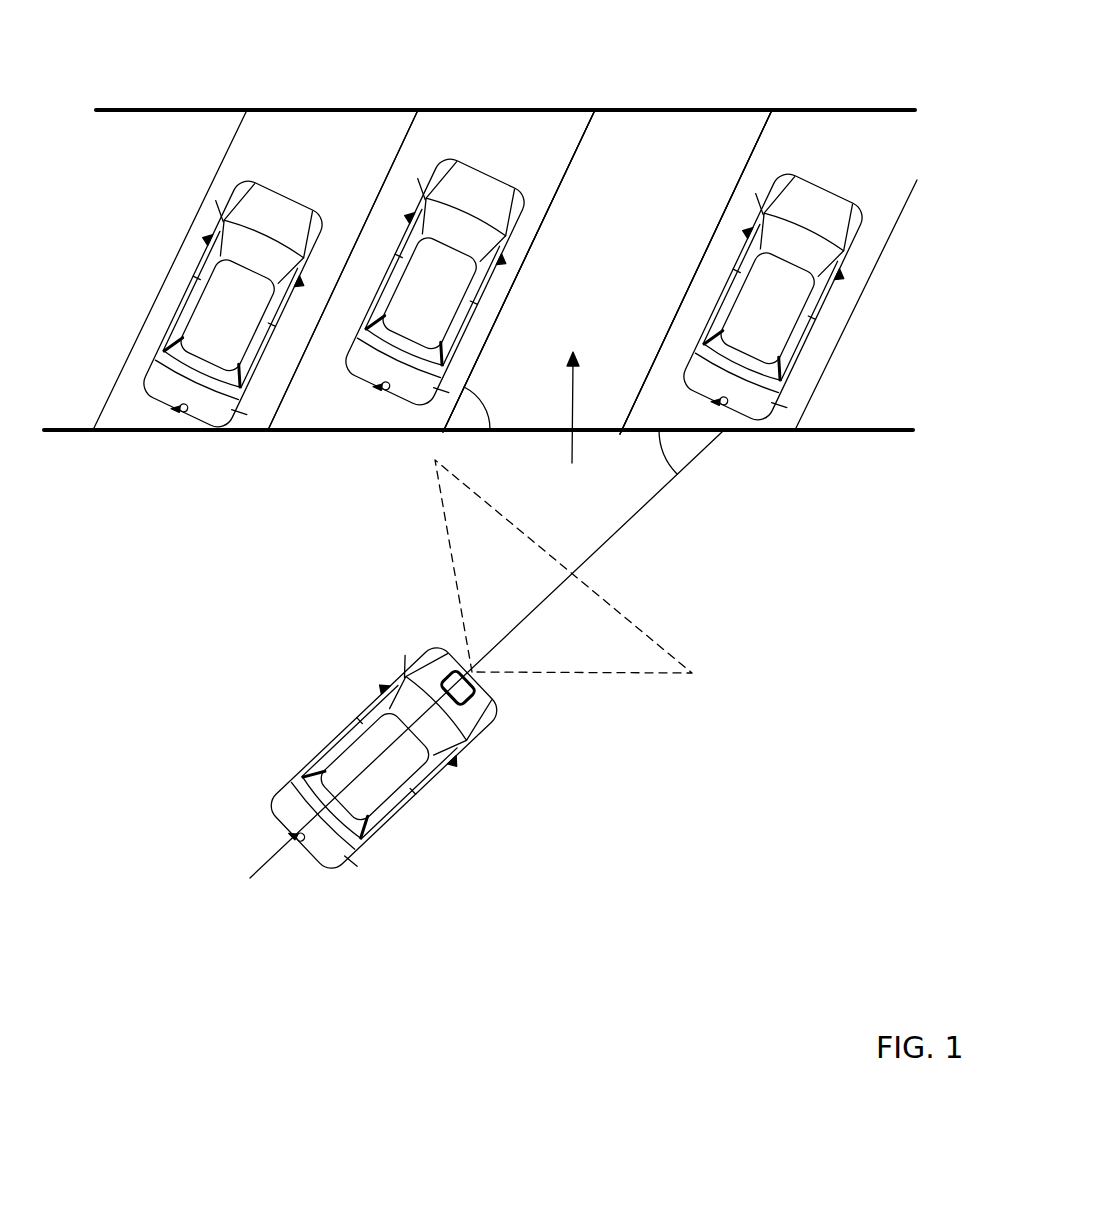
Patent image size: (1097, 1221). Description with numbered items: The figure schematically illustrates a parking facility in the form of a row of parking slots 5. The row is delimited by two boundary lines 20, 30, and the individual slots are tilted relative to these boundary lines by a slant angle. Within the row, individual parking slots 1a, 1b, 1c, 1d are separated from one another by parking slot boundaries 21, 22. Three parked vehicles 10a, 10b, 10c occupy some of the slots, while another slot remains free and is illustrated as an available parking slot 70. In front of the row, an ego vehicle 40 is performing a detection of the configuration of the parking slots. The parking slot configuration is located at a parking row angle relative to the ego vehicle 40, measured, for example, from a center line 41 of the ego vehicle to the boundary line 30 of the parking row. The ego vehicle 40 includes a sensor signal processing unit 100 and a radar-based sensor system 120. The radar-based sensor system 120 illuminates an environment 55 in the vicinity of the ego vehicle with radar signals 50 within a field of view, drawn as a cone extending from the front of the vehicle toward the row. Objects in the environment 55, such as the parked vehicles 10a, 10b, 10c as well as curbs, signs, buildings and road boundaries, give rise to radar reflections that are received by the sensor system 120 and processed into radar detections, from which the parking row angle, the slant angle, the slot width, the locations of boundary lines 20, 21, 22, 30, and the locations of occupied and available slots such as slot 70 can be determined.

The row of parking slots 5 is at (745, 57).
The boundary line 20 is at (130, 132).
The boundary line 30 is at (80, 448).
The parking slot 1a is at (255, 270).
The parking slot 1b is at (431, 271).
The parking slot 1c is at (607, 272).
The parking slot 1d is at (768, 272).
The parking slot boundary 21 is at (730, 172).
The parking slot boundary 22 is at (573, 195).
The available parking slot 70 is at (570, 426).
The parked vehicle 10a is at (232, 305).
The parked vehicle 10b is at (434, 283).
The parked vehicle 10c is at (772, 298).
The ego vehicle 40 is at (431, 759).
The center line 41 is at (486, 655).
The radar signals 50 is at (563, 566).
The environment 55 is at (757, 554).
The sensor signal processing unit 100 is at (524, 742).
The radar-based sensor system 120 is at (466, 694).